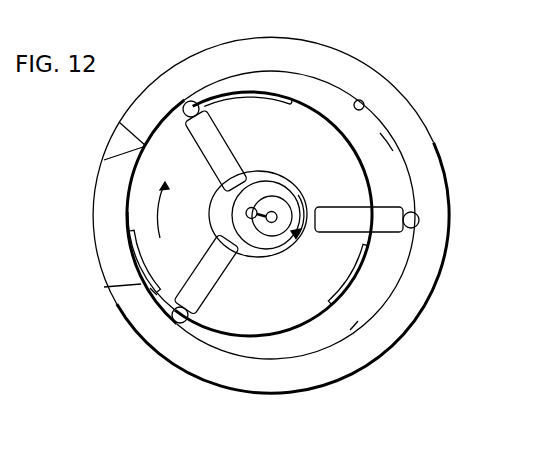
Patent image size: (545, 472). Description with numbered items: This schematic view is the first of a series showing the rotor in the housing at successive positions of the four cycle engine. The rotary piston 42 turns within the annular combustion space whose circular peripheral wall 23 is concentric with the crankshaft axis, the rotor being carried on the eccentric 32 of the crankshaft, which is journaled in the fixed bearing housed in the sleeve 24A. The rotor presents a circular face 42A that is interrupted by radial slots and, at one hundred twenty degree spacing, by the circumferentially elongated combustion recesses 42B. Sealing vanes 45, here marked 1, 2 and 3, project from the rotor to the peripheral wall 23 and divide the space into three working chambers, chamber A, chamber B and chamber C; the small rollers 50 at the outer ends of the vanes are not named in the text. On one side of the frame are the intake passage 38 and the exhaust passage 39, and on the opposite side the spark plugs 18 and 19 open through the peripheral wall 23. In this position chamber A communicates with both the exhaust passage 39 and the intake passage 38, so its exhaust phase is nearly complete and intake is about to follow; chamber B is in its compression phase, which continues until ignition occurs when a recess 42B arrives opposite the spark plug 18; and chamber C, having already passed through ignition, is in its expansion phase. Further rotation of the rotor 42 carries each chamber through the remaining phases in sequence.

The spark plug 18 is at (395, 172).
The spark plug 19 is at (398, 258).
The peripheral wall 23 is at (364, 104).
The sleeve 24A is at (293, 183).
The eccentric 32 is at (216, 197).
The intake passage 38 is at (120, 141).
The exhaust passage 39 is at (117, 302).
The rotary piston 42 is at (295, 315).
The circular face 42A is at (252, 338).
The combustion recess 42B is at (260, 93).
The sealing vane 45 is at (287, 212).
The rollers 50 is at (191, 102).
The arm 1 is at (215, 151).
The arm 2 is at (359, 219).
The arm 3 is at (207, 274).
The chamber A is at (157, 295).
The chamber B is at (378, 133).
The chamber C is at (358, 321).